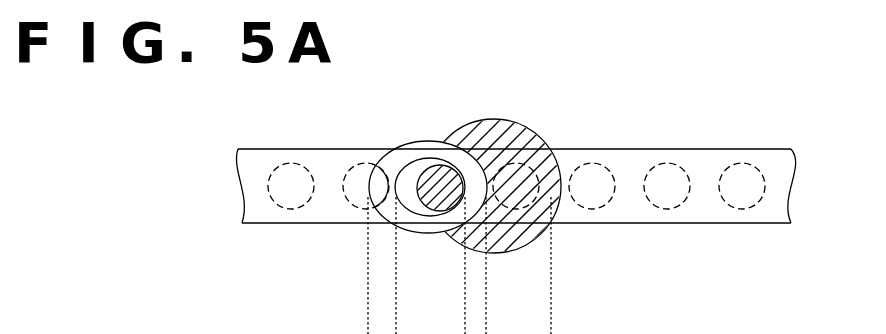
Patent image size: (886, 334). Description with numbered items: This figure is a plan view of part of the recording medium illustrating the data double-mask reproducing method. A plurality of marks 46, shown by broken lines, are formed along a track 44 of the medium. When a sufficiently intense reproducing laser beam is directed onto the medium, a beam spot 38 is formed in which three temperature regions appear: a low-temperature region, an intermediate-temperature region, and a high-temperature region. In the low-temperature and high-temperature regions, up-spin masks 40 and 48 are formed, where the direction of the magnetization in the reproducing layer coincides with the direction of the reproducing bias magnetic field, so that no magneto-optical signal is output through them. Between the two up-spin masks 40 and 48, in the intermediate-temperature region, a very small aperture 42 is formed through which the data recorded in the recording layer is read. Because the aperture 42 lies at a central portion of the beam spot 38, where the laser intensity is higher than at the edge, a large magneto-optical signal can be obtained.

The beam spot 38 is at (524, 128).
The up-spin mask 40 is at (482, 139).
The aperture 42 is at (468, 173).
The track 44 is at (782, 184).
The marks 46 is at (672, 163).
The up-spin mask 48 is at (435, 177).